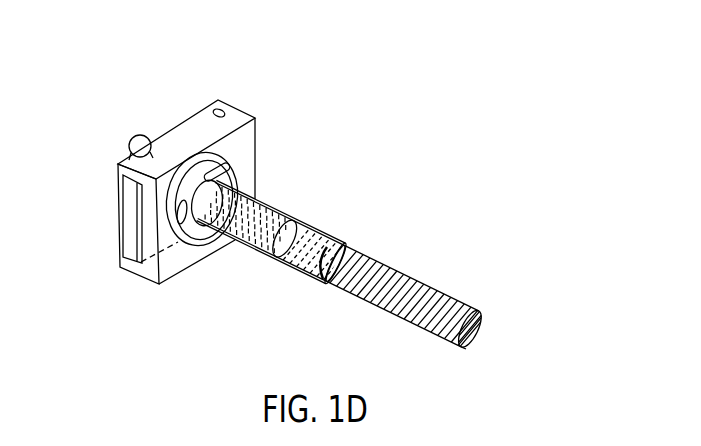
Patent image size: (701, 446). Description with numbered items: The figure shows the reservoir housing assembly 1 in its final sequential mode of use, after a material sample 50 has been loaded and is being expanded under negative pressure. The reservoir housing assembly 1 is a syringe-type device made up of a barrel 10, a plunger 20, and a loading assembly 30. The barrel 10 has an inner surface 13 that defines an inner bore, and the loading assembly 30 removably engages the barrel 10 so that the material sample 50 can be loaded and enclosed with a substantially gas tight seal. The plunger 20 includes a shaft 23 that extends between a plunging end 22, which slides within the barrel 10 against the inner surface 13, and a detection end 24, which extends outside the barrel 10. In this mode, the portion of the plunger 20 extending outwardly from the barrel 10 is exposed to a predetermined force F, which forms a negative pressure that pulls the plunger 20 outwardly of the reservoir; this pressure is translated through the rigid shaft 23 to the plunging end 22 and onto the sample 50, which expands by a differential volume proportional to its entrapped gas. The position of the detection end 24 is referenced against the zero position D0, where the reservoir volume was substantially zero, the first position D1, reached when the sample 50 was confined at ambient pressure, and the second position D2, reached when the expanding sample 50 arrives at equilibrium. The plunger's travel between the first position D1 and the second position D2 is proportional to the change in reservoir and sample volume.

The reservoir housing assembly 1 is at (527, 229).
The barrel 10 is at (318, 224).
The inner surface 13 is at (298, 216).
The plunger 20 is at (482, 307).
The plunging end 22 is at (262, 256).
The shaft 23 is at (370, 306).
The detection end 24 is at (463, 351).
The loading assembly 30 is at (165, 122).
The material sample 50 is at (248, 204).
The zero position D0 is at (345, 233).
The first position D1 is at (413, 267).
The second position D2 is at (478, 303).
The predetermined force F is at (497, 347).